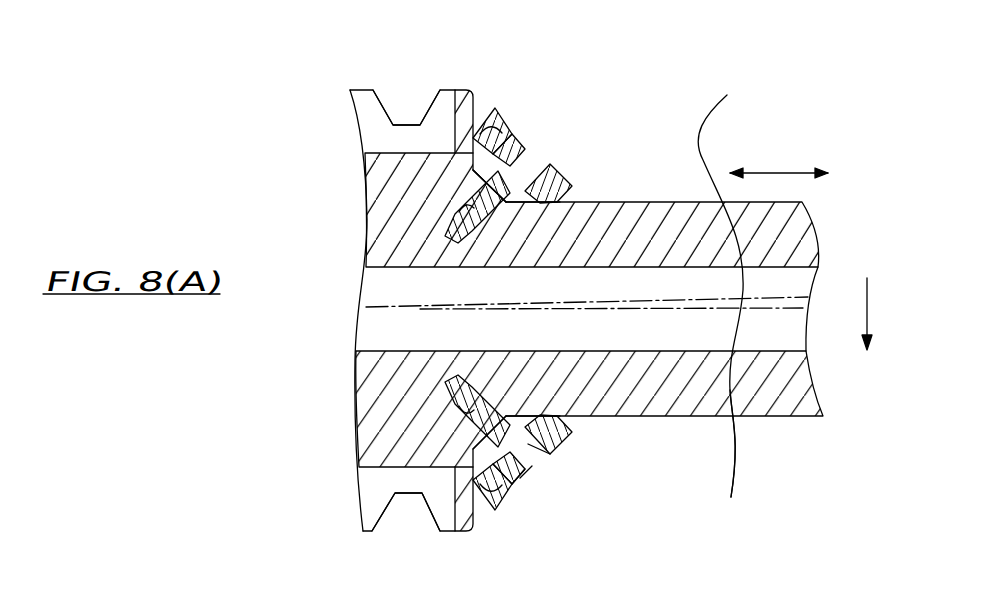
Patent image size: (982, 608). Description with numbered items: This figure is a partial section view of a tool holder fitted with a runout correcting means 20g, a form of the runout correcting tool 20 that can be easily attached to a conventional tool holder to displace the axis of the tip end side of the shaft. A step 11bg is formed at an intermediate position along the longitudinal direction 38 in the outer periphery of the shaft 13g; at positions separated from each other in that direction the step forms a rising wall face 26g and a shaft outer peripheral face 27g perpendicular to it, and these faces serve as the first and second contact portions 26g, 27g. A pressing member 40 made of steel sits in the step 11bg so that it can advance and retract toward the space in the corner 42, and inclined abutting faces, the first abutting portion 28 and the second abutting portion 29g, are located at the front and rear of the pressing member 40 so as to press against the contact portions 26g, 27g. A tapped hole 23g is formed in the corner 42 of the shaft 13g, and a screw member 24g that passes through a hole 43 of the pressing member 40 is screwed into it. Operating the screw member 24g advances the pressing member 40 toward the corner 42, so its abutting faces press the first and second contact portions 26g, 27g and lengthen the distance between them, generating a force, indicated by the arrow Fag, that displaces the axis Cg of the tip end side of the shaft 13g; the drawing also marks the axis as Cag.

The shaft 13g is at (797, 398).
The step 11bg is at (366, 172).
The rising wall face (first contact portion) 26g is at (450, 142).
The tapped hole 23g is at (465, 192).
The screw member 24g is at (497, 225).
The corner 42 is at (476, 190).
The first abutting portion 28 is at (498, 108).
The pressing member 40 is at (503, 128).
The second abutting portion 29g is at (550, 200).
The shaft outer peripheral face (second contact portion) 27g is at (553, 207).
The hole 43 is at (560, 440).
The runout correcting tool 20 is at (545, 143).
The runout correcting means 20g is at (537, 473).
The longitudinal direction 38 is at (780, 163).
The reference circle Cag is at (728, 281).
The axis Cg is at (729, 458).
The force direction Fag is at (868, 297).